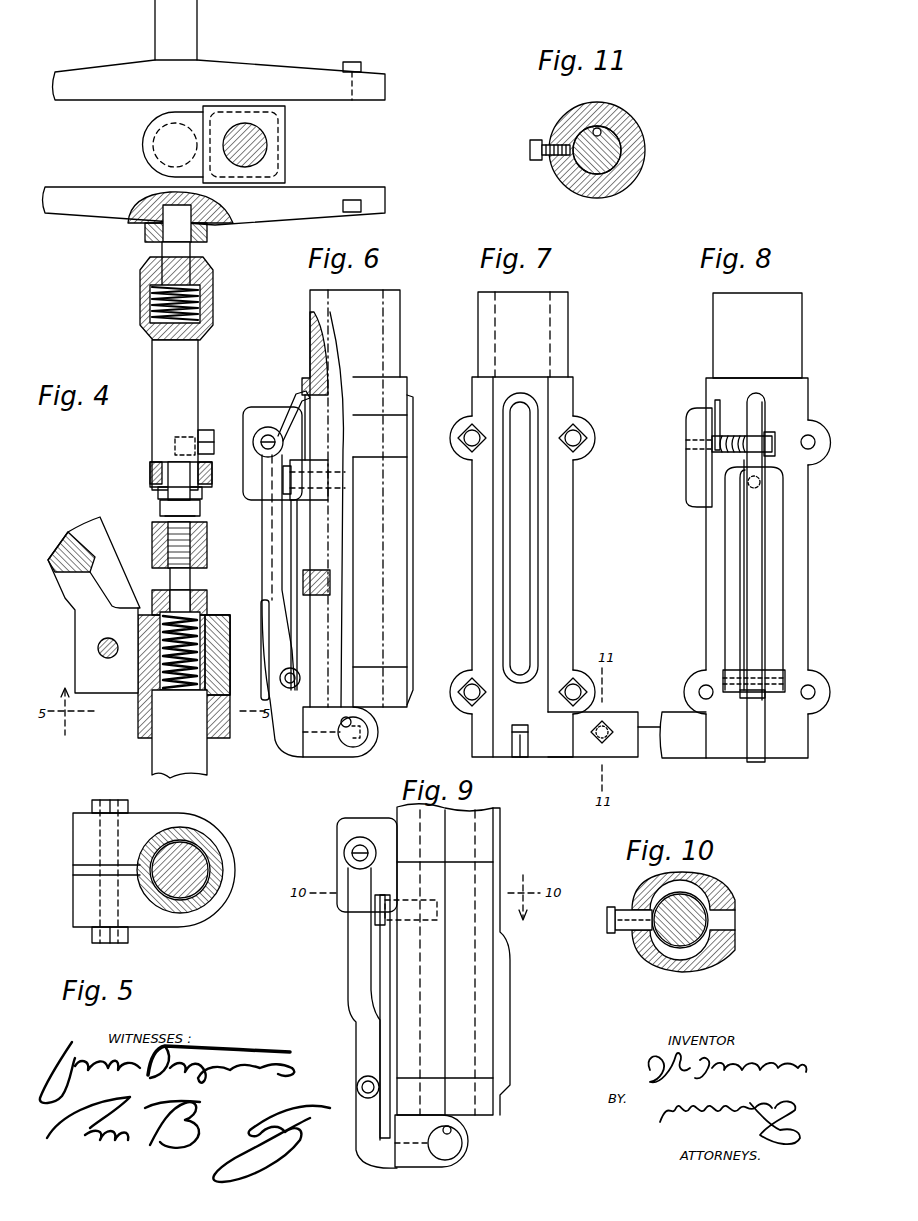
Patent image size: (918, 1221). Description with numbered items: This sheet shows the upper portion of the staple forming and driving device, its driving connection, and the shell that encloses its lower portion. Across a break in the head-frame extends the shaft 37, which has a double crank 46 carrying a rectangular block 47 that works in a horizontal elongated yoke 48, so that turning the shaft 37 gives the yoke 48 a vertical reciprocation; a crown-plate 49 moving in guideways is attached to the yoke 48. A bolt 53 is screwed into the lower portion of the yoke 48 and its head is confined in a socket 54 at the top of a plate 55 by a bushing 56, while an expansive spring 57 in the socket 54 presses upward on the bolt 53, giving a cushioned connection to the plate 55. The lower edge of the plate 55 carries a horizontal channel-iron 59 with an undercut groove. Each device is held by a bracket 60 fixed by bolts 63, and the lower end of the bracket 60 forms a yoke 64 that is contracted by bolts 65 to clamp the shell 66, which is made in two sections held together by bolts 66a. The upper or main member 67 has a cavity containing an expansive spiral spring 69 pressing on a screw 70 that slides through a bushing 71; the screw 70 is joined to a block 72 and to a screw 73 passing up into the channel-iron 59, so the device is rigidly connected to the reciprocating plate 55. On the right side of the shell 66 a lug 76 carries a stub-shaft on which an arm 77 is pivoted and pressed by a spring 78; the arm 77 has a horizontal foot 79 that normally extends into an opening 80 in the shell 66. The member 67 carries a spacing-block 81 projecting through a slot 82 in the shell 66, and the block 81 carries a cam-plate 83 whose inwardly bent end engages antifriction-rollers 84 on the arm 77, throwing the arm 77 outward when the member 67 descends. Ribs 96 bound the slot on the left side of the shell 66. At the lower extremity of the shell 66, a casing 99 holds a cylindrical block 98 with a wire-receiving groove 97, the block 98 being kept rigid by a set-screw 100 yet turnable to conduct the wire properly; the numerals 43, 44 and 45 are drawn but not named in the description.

In FIG. 4, the shaft 37 is at (165, 149).
In FIG. 4, the nut 43 is at (201, 508).
In FIG. 4, the bolt 44 is at (205, 475).
In FIG. 4, the washer 45 is at (204, 493).
In FIG. 4, the double crank 46 is at (268, 143).
In FIG. 4, the rectangular block 47 is at (278, 173).
In FIG. 4, the yoke 48 is at (214, 142).
In FIG. 4, the crown-plate 49 is at (197, 52).
In FIG. 4, the bolt 53 is at (185, 254).
In FIG. 4, the socket 54 is at (213, 318).
In FIG. 4, the plate 55 is at (190, 414).
In FIG. 4, the bushing 56 is at (208, 262).
In FIG. 4, the expansive spring 57 is at (150, 328).
In FIG. 4, the channel-iron 59 is at (150, 478).
In FIG. 4, the bracket 60 is at (98, 540).
In FIG. 4, the bolt 63 is at (97, 652).
In FIG. 4, the yoke 64 is at (230, 668).
In FIG. 5, the yoke 64 is at (213, 908).
In FIG. 5, the bolt 65 is at (128, 938).
In FIG. 4, the shell 66 is at (230, 728).
In FIG. 6, the shell 66 is at (400, 347).
In FIG. 7, the shell 66 is at (565, 353).
In FIG. 8, the shell 66 is at (688, 560).
In FIG. 5, the shell 66 is at (220, 852).
In FIG. 9, the shell 66 is at (445, 959).
In FIG. 10, the shell 66 is at (700, 886).
In FIG. 7, the bolt 66a is at (588, 437).
In FIG. 4, the upper or main member 67 is at (179, 734).
In FIG. 6, the upper or main member 67 is at (332, 441).
In FIG. 5, the upper or main member 67 is at (208, 870).
In FIG. 10, the upper or main member 67 is at (700, 910).
In FIG. 4, the expansive spiral spring 69 is at (208, 605).
In FIG. 4, the screw 70 is at (190, 588).
In FIG. 4, the bushing 71 is at (251, 575).
In FIG. 4, the block 72 is at (208, 550).
In FIG. 4, the screw 73 is at (198, 520).
In FIG. 6, the lug 76 is at (262, 412).
In FIG. 8, the lug 76 is at (692, 478).
In FIG. 9, the lug 76 is at (367, 865).
In FIG. 6, the arm 77 is at (282, 622).
In FIG. 8, the arm 77 is at (768, 614).
In FIG. 9, the arm 77 is at (368, 1056).
In FIG. 6, the spring 78 is at (270, 652).
In FIG. 8, the spring 78 is at (742, 612).
In FIG. 6, the foot 79 is at (322, 757).
In FIG. 7, the foot 79 is at (516, 757).
In FIG. 9, the foot 79 is at (390, 1155).
In FIG. 7, the opening 80 is at (528, 748).
In FIG. 6, the spacing-block 81 is at (314, 480).
In FIG. 8, the spacing-block 81 is at (765, 474).
In FIG. 9, the spacing-block 81 is at (392, 905).
In FIG. 10, the spacing-block 81 is at (627, 931).
In FIG. 6, the slot 82 is at (299, 400).
In FIG. 8, the slot 82 is at (717, 425).
In FIG. 10, the slot 82 is at (636, 897).
In FIG. 6, the cam-plate 83 is at (297, 550).
In FIG. 8, the cam-plate 83 is at (776, 566).
In FIG. 9, the cam-plate 83 is at (382, 958).
In FIG. 10, the cam-plate 83 is at (616, 908).
In FIG. 6, the antifriction-roller 84 is at (290, 690).
In FIG. 8, the antifriction-roller 84 is at (728, 676).
In FIG. 9, the antifriction-roller 84 is at (368, 1087).
In FIG. 6, the rib 96 is at (411, 585).
In FIG. 7, the rib 96 is at (540, 496).
In FIG. 9, the rib 96 is at (508, 985).
In FIG. 10, the rib 96 is at (736, 917).
In FIG. 6, the groove 97 is at (351, 722).
In FIG. 11, the groove 97 is at (592, 130).
In FIG. 9, the groove 97 is at (452, 1130).
In FIG. 6, the cylindrical block 98 is at (352, 742).
In FIG. 11, the cylindrical block 98 is at (630, 130).
In FIG. 9, the cylindrical block 98 is at (445, 1143).
In FIG. 6, the casing 99 is at (368, 733).
In FIG. 7, the casing 99 is at (593, 734).
In FIG. 11, the casing 99 is at (640, 157).
In FIG. 9, the casing 99 is at (462, 1150).
In FIG. 7, the set-screw 100 is at (610, 724).
In FIG. 11, the set-screw 100 is at (530, 151).